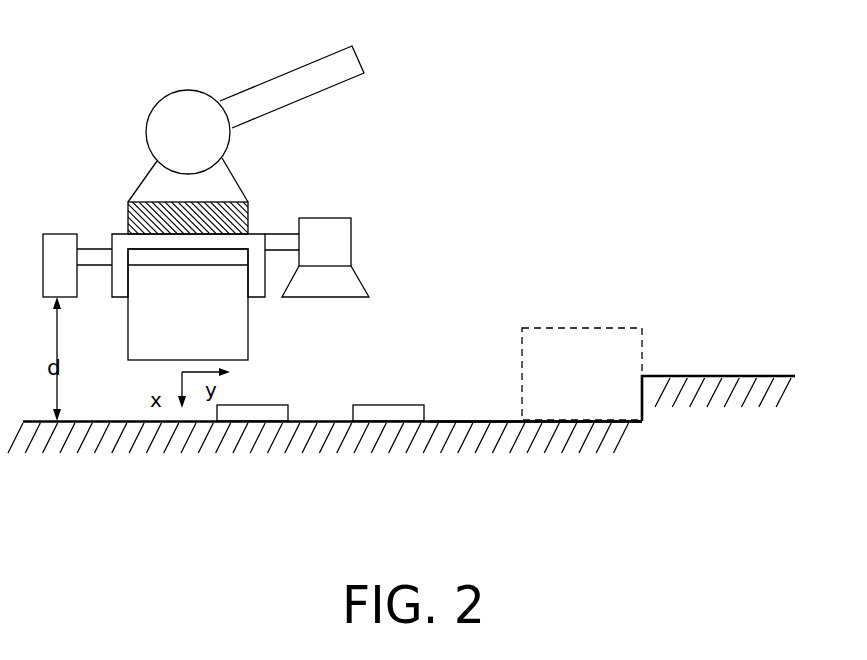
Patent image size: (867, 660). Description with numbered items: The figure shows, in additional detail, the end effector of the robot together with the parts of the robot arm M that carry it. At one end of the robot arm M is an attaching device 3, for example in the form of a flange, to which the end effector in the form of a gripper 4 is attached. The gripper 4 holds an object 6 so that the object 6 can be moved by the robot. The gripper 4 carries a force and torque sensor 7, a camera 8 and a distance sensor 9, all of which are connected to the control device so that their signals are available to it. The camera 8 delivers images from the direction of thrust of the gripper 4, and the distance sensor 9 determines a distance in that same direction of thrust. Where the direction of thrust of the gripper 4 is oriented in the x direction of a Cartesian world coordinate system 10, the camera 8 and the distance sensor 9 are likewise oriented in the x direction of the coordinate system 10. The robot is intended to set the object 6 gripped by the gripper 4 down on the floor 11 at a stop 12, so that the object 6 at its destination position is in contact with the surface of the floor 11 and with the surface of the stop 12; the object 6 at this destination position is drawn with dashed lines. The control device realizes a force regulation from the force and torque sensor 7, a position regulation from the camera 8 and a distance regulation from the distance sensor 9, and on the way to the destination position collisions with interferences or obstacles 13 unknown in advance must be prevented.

The robot arm M is at (218, 40).
The attaching device 3 is at (153, 187).
The gripper 4 is at (117, 253).
The object 6 is at (196, 326).
The force and torque sensor 7 is at (250, 212).
The camera 8 is at (333, 235).
The distance sensor 9 is at (57, 250).
The Cartesian world coordinate system 10 is at (200, 422).
The floor 11 is at (473, 432).
The stop 12 is at (643, 402).
The obstacles 13 is at (368, 413).